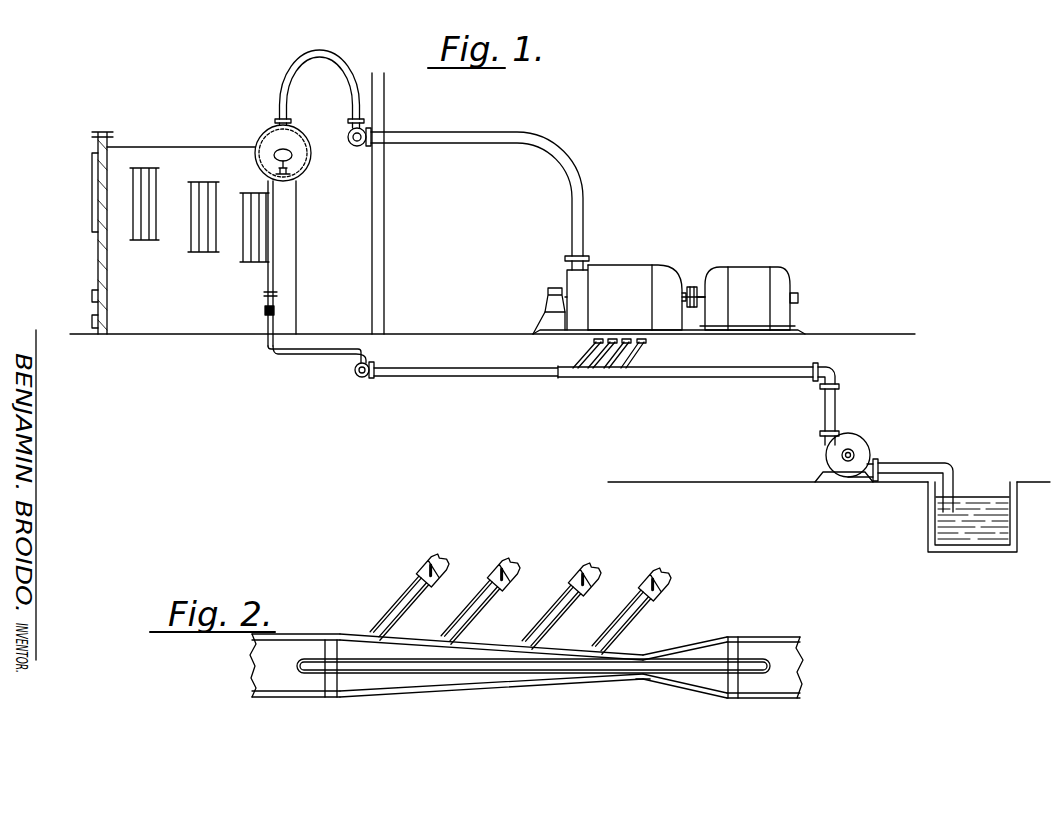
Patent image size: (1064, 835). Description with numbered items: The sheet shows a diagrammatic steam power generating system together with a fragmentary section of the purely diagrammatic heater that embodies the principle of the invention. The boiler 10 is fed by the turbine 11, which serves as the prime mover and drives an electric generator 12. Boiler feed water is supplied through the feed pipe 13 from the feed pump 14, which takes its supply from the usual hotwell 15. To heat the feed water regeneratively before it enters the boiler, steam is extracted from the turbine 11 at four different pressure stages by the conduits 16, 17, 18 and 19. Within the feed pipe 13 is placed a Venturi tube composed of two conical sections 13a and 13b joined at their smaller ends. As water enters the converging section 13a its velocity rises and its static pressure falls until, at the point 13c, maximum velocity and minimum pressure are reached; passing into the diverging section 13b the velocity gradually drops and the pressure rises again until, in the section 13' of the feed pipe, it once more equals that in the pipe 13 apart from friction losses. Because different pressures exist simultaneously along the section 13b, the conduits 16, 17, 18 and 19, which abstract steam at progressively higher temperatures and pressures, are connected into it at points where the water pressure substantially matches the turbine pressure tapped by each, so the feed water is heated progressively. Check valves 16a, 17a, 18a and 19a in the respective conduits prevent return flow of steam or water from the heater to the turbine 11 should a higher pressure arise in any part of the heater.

In FIG. 1, the boiler 10 is at (168, 160).
In FIG. 1, the turbine 11 is at (615, 282).
In FIG. 1, the electric generator 12 is at (751, 273).
In FIG. 1, the feed pipe 13 is at (698, 399).
In FIG. 2, the feed pipe 13 is at (780, 667).
In FIG. 1, the section of the feed pipe 13' is at (466, 383).
In FIG. 2, the section of the feed pipe 13' is at (507, 677).
In FIG. 2, the conical section 13a is at (693, 691).
In FIG. 2, the conical section 13b is at (423, 690).
In FIG. 2, the point 13c is at (647, 680).
In FIG. 1, the feed pump 14 is at (833, 449).
In FIG. 1, the hotwell 15 is at (1003, 523).
In FIG. 1, the conduit 16 is at (630, 362).
In FIG. 2, the conduit 16 is at (632, 628).
In FIG. 1, the check valve 16a is at (645, 347).
In FIG. 2, the check valve 16a is at (658, 584).
In FIG. 1, the conduit 17 is at (612, 370).
In FIG. 2, the conduit 17 is at (543, 613).
In FIG. 1, the check valve 17a is at (626, 339).
In FIG. 2, the check valve 17a is at (580, 578).
In FIG. 1, the conduit 18 is at (599, 370).
In FIG. 2, the conduit 18 is at (463, 620).
In FIG. 1, the check valve 18a is at (609, 339).
In FIG. 2, the check valve 18a is at (507, 575).
In FIG. 1, the conduit 19 is at (577, 362).
In FIG. 2, the conduit 19 is at (396, 606).
In FIG. 1, the check valve 19a is at (595, 342).
In FIG. 2, the check valve 19a is at (437, 572).